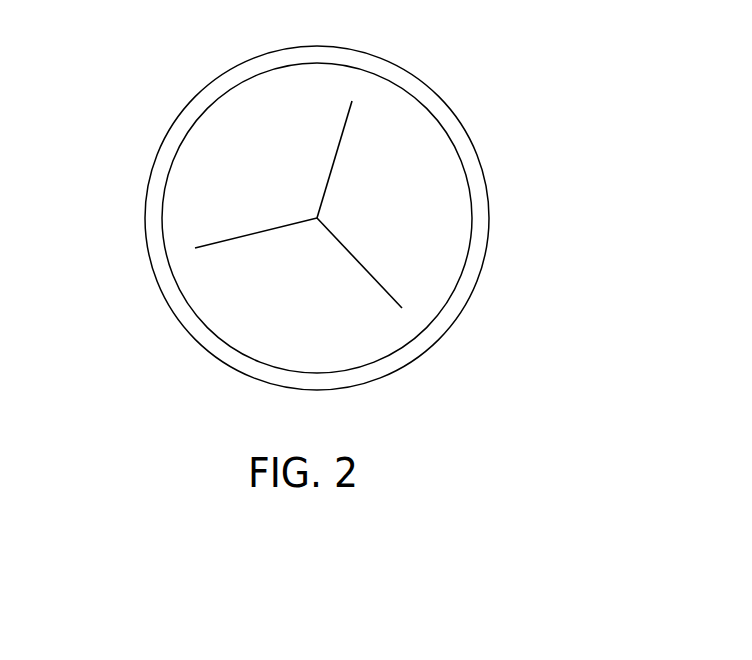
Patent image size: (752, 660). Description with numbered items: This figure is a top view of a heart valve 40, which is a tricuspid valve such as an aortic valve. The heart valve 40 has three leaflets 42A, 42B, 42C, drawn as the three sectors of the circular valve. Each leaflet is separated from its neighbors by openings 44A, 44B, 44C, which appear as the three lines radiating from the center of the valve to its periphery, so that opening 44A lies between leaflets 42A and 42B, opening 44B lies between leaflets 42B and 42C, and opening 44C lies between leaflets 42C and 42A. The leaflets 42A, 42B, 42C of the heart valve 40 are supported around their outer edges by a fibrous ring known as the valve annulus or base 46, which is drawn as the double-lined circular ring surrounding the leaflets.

The heart valve 40 is at (329, 198).
The leaflet 42A is at (262, 162).
The leaflet 42B is at (392, 208).
The leaflet 42C is at (297, 318).
The opening 44A is at (342, 153).
The opening 44B is at (365, 268).
The opening 44C is at (250, 233).
The valve annulus 46 is at (470, 145).